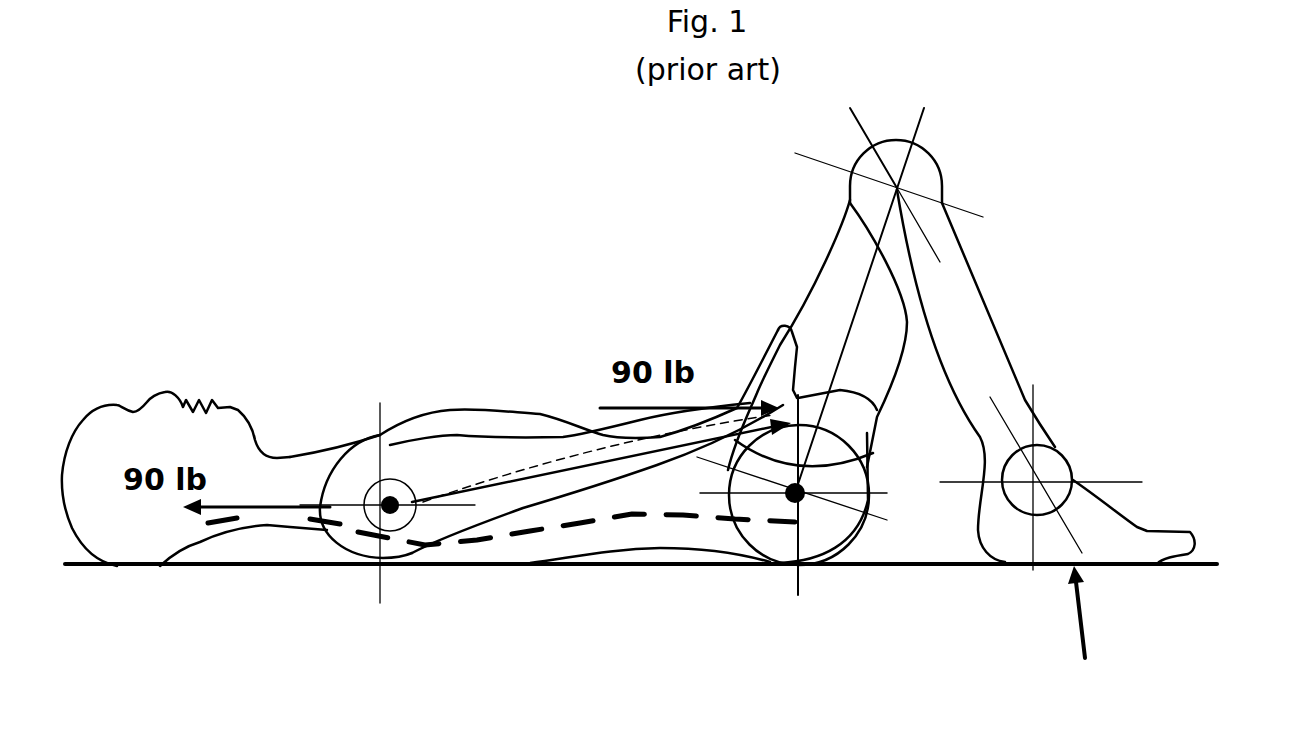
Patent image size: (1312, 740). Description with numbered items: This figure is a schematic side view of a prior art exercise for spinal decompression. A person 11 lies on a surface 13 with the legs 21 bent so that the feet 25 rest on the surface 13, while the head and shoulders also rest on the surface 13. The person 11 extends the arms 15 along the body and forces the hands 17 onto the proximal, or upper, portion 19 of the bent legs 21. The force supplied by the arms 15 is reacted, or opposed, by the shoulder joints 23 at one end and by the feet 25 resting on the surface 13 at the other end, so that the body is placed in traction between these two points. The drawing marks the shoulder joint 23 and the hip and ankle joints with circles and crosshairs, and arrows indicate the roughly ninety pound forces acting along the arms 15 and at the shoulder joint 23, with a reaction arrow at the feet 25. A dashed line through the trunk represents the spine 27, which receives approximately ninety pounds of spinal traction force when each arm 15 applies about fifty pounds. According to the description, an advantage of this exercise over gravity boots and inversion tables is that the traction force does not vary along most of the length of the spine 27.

The person 11 is at (425, 413).
The surface 13 is at (1203, 560).
The arms 15 is at (507, 497).
The hands 17 is at (792, 405).
The proximal portion of bent legs 19 is at (805, 373).
The bent legs 21 is at (952, 267).
The shoulder joints 23 is at (378, 528).
The feet 25 is at (1137, 530).
The spine 27 is at (590, 520).